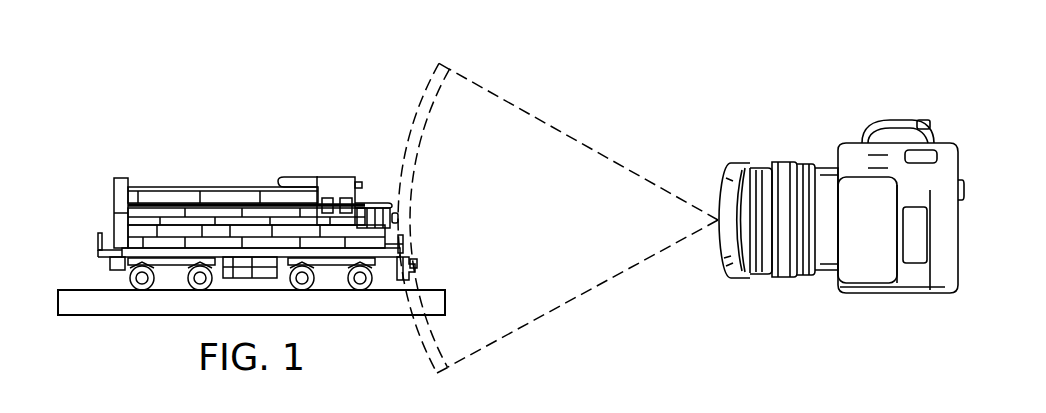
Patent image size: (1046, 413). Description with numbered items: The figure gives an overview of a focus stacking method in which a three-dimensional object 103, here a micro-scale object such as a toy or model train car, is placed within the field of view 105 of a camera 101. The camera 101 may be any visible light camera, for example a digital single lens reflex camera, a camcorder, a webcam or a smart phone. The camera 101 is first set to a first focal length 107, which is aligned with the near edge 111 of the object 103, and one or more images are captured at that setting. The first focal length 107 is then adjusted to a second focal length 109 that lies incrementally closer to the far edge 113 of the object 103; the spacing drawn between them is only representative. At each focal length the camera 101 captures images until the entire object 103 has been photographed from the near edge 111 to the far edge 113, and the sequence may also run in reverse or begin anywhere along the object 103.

The camera 101 is at (810, 162).
The three-dimensional object 103 is at (223, 186).
The field of view 105 is at (573, 234).
The first focal length 107 is at (450, 70).
The second focal length 109 is at (427, 90).
The near edge 111 is at (417, 263).
The far edge 113 is at (114, 198).